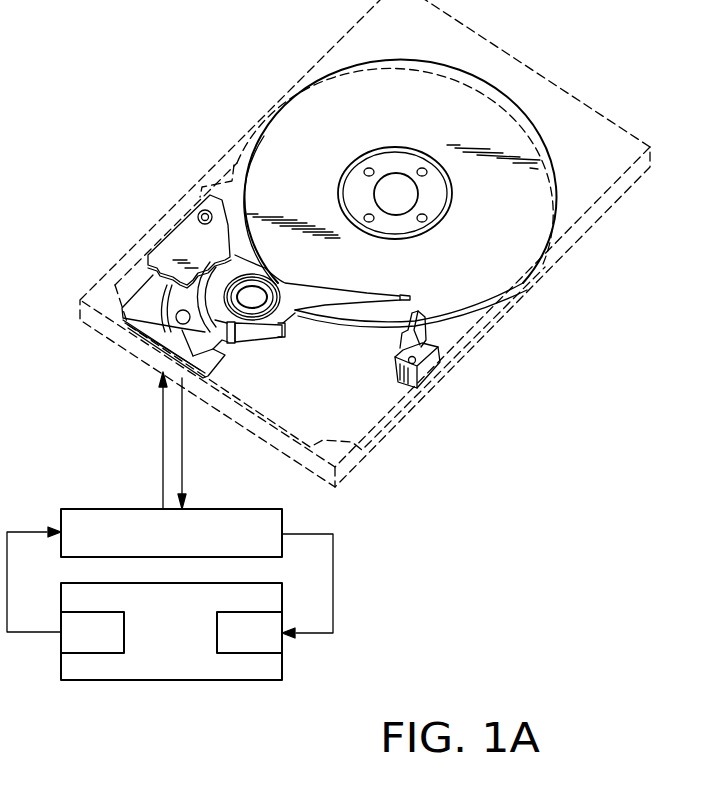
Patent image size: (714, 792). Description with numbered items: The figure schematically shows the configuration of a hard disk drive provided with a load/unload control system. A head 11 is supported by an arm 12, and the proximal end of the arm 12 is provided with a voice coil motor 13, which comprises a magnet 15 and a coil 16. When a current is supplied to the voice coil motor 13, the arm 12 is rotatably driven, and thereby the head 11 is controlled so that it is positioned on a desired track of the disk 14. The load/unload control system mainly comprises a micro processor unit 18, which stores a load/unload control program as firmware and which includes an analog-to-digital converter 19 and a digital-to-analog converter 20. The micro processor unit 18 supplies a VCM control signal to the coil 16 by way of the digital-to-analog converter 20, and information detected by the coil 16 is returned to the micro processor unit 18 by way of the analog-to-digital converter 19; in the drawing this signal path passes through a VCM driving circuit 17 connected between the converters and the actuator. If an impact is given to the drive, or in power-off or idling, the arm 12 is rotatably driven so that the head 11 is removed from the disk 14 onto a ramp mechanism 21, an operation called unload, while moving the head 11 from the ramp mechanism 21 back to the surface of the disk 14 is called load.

The head 11 is at (407, 293).
The arm 12 is at (293, 300).
The voice coil motor 13 is at (192, 240).
The disk 14 is at (278, 155).
The magnet 15 is at (198, 378).
The coil 16 is at (175, 298).
The VCM driving circuit 17 is at (107, 508).
The micro processor unit 18 is at (170, 681).
The analog-to-digital converter 19 is at (241, 654).
The digital-to-analog converter 20 is at (98, 654).
The ramp mechanism 21 is at (437, 353).